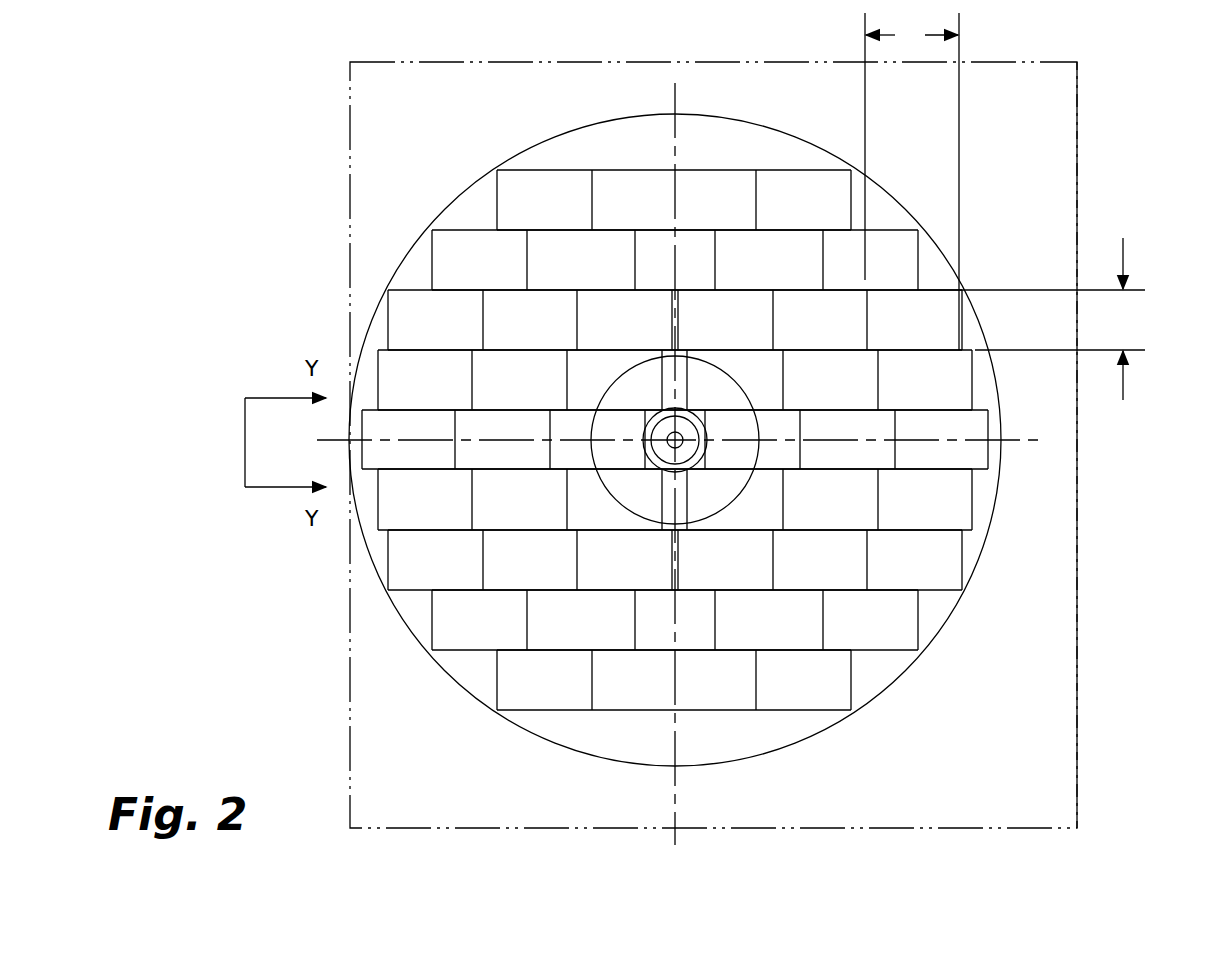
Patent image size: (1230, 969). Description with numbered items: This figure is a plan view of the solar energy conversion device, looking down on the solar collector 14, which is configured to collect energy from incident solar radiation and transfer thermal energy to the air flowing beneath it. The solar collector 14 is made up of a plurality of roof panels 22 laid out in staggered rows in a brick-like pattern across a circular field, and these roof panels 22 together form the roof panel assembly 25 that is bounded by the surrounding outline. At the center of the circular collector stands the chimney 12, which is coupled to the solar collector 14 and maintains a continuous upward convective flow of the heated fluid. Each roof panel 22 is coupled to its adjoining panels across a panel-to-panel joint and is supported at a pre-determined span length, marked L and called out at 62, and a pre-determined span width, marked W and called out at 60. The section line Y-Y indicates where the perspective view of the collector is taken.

The chimney 12 is at (608, 388).
The solar collector 14 is at (349, 746).
The roof panel 22 is at (947, 553).
The roof panel assembly 25 is at (1078, 481).
The tile width W 60 is at (1145, 322).
The tile length L 62 is at (920, 25).